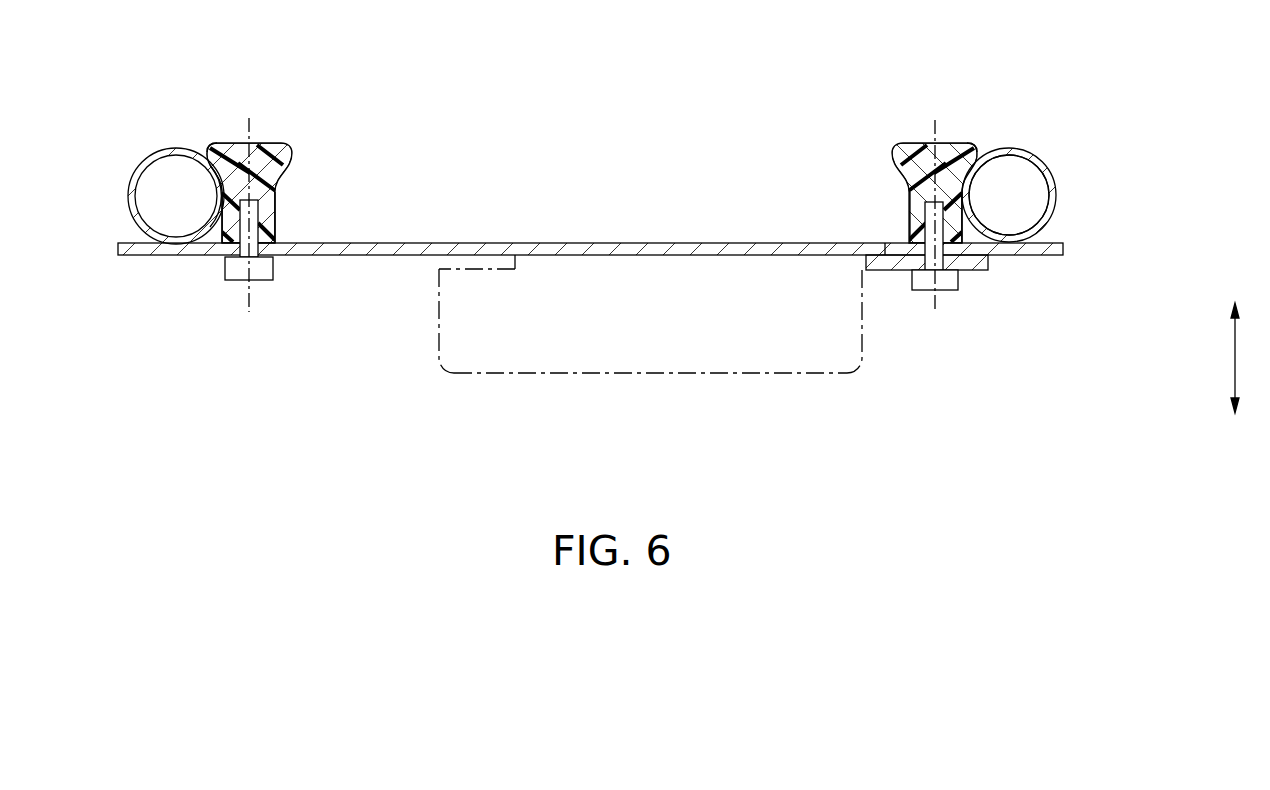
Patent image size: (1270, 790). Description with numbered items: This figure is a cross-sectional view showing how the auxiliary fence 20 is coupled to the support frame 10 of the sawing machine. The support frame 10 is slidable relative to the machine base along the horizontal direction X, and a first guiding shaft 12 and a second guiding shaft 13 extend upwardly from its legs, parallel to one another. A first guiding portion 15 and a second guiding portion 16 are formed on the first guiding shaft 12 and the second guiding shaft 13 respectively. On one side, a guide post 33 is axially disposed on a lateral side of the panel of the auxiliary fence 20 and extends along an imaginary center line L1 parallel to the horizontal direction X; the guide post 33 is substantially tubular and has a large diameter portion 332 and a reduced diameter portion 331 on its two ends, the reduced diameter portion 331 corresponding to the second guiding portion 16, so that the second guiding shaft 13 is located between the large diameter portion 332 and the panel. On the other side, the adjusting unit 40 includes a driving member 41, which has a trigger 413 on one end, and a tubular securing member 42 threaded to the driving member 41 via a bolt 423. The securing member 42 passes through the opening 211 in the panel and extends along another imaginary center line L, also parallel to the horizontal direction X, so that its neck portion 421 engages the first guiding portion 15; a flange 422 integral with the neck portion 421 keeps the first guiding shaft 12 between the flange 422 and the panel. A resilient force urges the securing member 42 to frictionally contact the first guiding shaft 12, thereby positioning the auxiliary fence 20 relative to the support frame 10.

The support frame 10 is at (1053, 162).
The first guiding shaft 12 is at (1053, 207).
The second guiding shaft 13 is at (137, 193).
The first guiding portion 15 is at (968, 186).
The second guiding portion 16 is at (222, 197).
The auxiliary fence 20 is at (1066, 250).
The opening 211 is at (897, 256).
The guide post 33 is at (283, 170).
The reduced diameter portion 331 is at (233, 163).
The large diameter portion 332 is at (213, 147).
The adjusting unit 40 is at (790, 376).
The driving member 41 is at (675, 347).
The trigger 413 is at (458, 330).
The securing member 42 is at (912, 175).
The neck portion 421 is at (907, 203).
The flange 422 is at (975, 150).
The bolt 423 is at (947, 290).
The imaginary center line L is at (936, 196).
The imaginary center line L1 is at (261, 196).
The horizontal direction X is at (1248, 358).